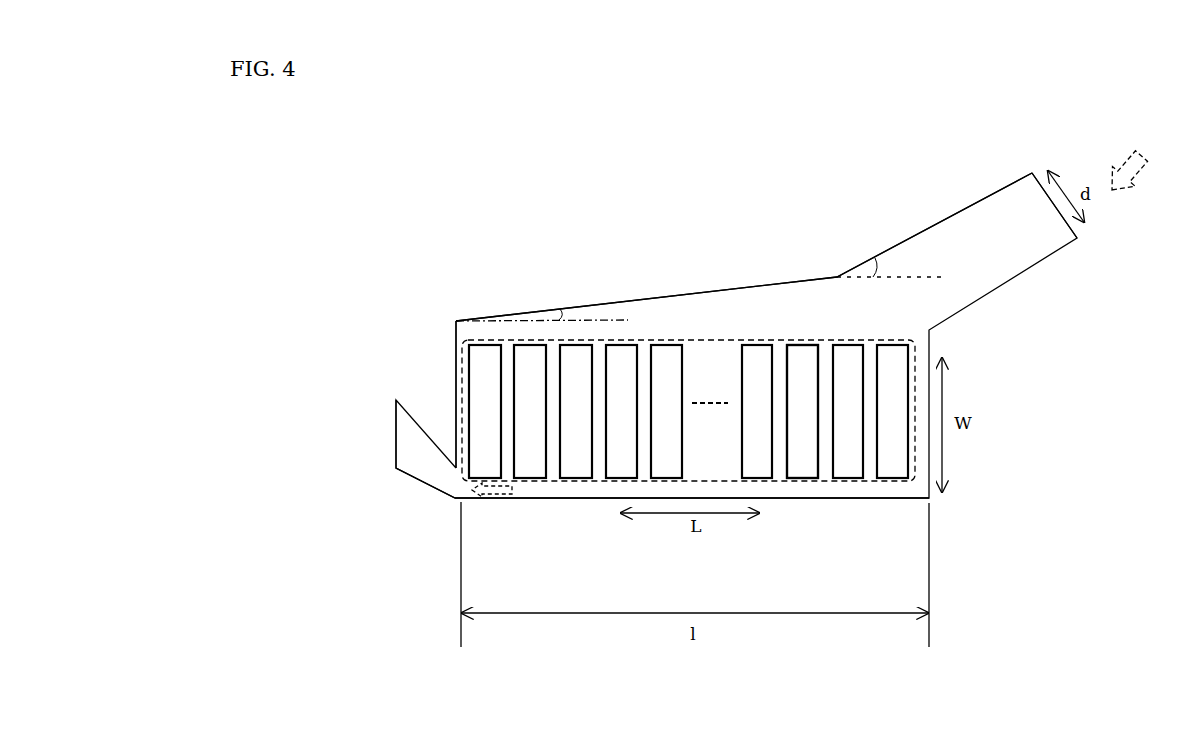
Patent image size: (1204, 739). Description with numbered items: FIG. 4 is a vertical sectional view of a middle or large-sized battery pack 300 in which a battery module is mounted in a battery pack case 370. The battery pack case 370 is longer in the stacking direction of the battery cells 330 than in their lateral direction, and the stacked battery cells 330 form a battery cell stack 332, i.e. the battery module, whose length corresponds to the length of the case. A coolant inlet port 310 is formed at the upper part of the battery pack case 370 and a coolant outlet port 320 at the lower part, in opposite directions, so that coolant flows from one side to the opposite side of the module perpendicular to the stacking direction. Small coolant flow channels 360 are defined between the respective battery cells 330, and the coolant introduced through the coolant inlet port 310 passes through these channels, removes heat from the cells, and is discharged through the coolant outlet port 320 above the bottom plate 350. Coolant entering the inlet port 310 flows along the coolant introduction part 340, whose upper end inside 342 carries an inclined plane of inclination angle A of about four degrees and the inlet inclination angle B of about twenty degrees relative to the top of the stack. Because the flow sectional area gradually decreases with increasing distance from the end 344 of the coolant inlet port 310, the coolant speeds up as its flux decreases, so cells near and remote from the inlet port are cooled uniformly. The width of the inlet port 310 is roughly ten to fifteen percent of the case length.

The antenna / radiating element 300 is at (349, 186).
The coolant inlet port 310 is at (1037, 249).
The coolant outlet port 320 is at (417, 467).
The battery cells 330 is at (538, 468).
The battery cell stack 332 is at (816, 478).
The coolant introduction part 340 is at (805, 318).
The upper end inside of the coolant introduction part 342 is at (598, 302).
The end of the coolant inlet port 344 is at (840, 268).
The bottom plate 350 is at (602, 494).
The coolant flow channels 360 is at (871, 470).
The battery pack case 370 is at (447, 347).